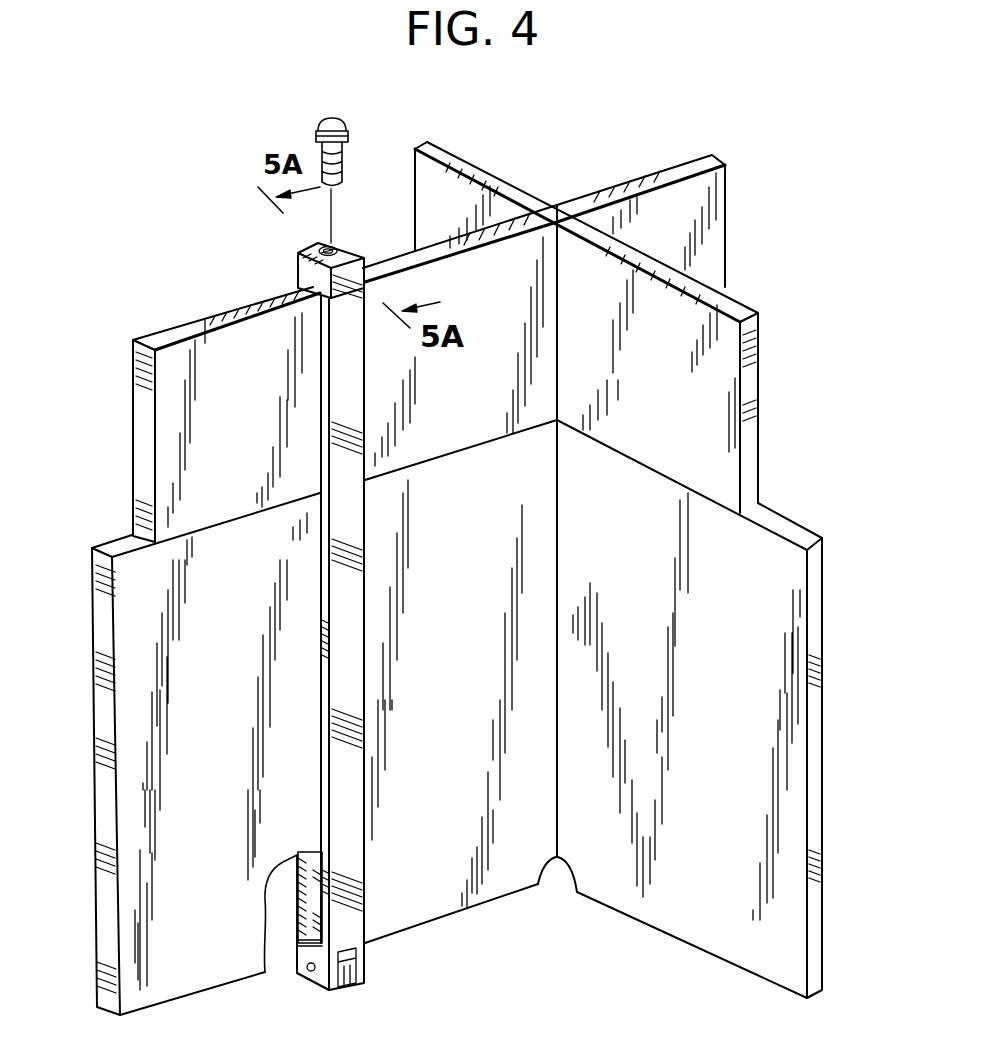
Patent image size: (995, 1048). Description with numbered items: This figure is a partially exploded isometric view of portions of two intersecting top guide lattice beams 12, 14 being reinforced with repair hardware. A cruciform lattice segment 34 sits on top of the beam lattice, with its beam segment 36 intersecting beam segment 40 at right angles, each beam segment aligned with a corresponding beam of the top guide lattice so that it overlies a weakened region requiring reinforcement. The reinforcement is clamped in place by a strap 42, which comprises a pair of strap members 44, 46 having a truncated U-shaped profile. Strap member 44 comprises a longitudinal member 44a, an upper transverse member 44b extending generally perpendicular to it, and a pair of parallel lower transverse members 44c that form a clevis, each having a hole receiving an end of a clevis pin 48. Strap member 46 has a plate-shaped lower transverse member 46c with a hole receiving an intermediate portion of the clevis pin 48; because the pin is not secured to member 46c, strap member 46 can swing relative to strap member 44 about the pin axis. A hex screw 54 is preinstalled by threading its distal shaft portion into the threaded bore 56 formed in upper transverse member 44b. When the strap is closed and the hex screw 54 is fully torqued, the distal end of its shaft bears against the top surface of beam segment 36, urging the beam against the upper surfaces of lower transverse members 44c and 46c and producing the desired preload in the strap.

The top guide lattice beam 12 is at (773, 587).
The top guide lattice beam 14 is at (130, 765).
The cruciform lattice segment 34 is at (560, 193).
The beam segment 36 is at (205, 342).
The beam segment 40 is at (690, 328).
The strap 42 is at (366, 652).
The strap member 44 is at (348, 621).
The longitudinal member 44a is at (365, 530).
The upper transverse member 44b is at (309, 249).
The lower transverse members 44c is at (322, 947).
The strap member 46 is at (294, 934).
The lower transverse member 46c is at (355, 983).
The clevis pin 48 is at (311, 972).
The hex screw 54 is at (341, 128).
The threaded bore 56 is at (336, 249).